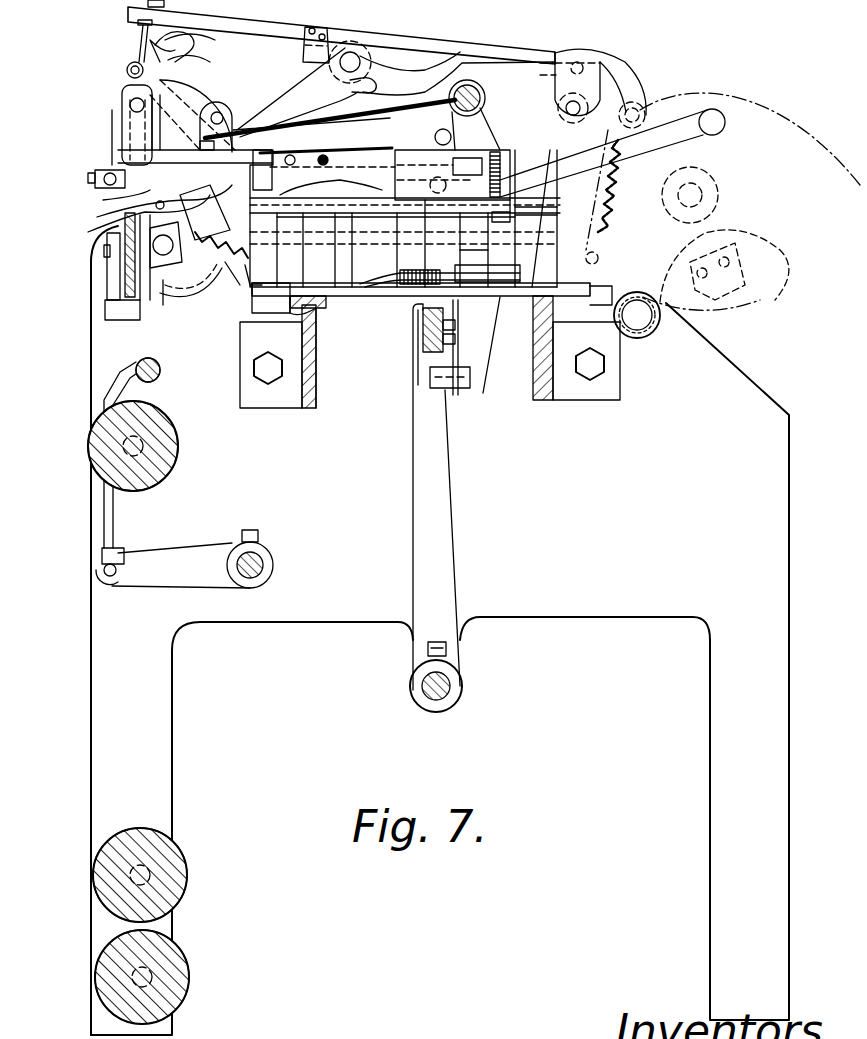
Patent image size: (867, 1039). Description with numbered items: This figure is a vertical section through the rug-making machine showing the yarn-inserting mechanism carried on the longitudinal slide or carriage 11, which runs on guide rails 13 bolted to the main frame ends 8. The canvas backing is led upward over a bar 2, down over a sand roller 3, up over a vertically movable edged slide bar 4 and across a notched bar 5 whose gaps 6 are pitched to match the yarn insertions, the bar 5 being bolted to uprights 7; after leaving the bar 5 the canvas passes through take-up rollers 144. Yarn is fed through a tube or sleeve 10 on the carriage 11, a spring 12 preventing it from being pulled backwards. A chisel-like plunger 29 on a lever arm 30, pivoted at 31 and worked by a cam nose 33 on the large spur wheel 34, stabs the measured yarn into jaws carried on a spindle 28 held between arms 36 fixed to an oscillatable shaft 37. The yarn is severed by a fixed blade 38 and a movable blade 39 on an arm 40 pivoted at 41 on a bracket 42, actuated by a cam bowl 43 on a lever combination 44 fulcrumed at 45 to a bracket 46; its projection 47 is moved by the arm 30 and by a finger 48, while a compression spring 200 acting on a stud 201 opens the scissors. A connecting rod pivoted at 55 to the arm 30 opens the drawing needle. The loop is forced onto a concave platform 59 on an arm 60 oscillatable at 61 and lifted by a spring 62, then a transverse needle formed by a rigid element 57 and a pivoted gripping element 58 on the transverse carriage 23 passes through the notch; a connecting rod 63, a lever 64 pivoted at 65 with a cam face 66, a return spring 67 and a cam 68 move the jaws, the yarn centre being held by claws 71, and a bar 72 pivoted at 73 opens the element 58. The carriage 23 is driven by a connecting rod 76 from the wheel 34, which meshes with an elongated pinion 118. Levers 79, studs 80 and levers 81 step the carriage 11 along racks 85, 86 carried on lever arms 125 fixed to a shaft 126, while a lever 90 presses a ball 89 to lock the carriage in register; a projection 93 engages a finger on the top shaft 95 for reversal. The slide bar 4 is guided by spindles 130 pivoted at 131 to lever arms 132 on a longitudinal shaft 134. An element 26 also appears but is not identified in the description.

The bar 2 is at (160, 379).
The sand roller 3 is at (118, 450).
The edged slide bar 4 is at (120, 260).
The notched bar 5 is at (127, 320).
The gaps 6 is at (141, 218).
The uprights 7 is at (105, 262).
The main frame ends 8 is at (91, 663).
The tube or sleeve 10 is at (118, 154).
The slide or carriage 11 is at (596, 293).
The spring 12 is at (128, 150).
The guide rails 13 is at (310, 382).
The transverse carriage 23 is at (412, 151).
The shaft 26 is at (558, 240).
The bar or spindle 28 is at (100, 184).
The chisel-like plunger 29 is at (141, 40).
The lever arm 30 is at (342, 37).
The pivot 31 is at (566, 108).
The cam nose 33 is at (740, 288).
The large spur wheel 34 is at (712, 313).
The arms 36 is at (97, 217).
The shaft 37 is at (165, 270).
The fixed blade 38 is at (120, 132).
The movable blade 39 is at (192, 110).
The arm 40 is at (175, 48).
The pivot 41 is at (130, 105).
The bracket 42 is at (122, 90).
The cam bowl 43 is at (127, 71).
The lever combination 44 is at (246, 103).
The fulcrum 45 is at (300, 126).
The bracket 46 is at (216, 126).
The projection 47 is at (358, 52).
The finger 48 is at (376, 86).
The pivot 55 is at (579, 62).
The rigid element 57 is at (221, 263).
The pivoted gripping element 58 is at (250, 292).
The concave platform 59 is at (151, 250).
The arm 60 is at (205, 300).
The pivot mounting 61 is at (403, 218).
The spring 62 is at (292, 157).
The connecting rod 63 is at (185, 282).
The lever 64 is at (342, 150).
The pivot 65 is at (320, 157).
The cam face 66 is at (367, 178).
The spring 67 is at (228, 292).
The cam 68 is at (163, 306).
The claws 71 is at (119, 199).
The bar 72 is at (390, 264).
The pivot 73 is at (540, 212).
The connecting rod 76 is at (630, 152).
The levers 79 is at (326, 302).
The studs 80 is at (465, 351).
The levers 81 is at (413, 378).
The rack 85 is at (423, 332).
The rack 86 is at (453, 352).
The ball 89 is at (322, 318).
The lever 90 is at (372, 273).
The projection 93 is at (486, 130).
The top shaft 95 is at (487, 97).
The elongated pinion 118 is at (644, 328).
The lever arms 125 is at (450, 514).
The shaft 126 is at (452, 682).
The vertical spindles 130 is at (114, 522).
The pivotal connection 131 is at (104, 570).
The lever arms 132 is at (183, 590).
The longitudinal shaft 134 is at (258, 575).
The take-up rollers 144 is at (112, 895).
The compression spring 200 is at (205, 62).
The stud 201 is at (207, 44).